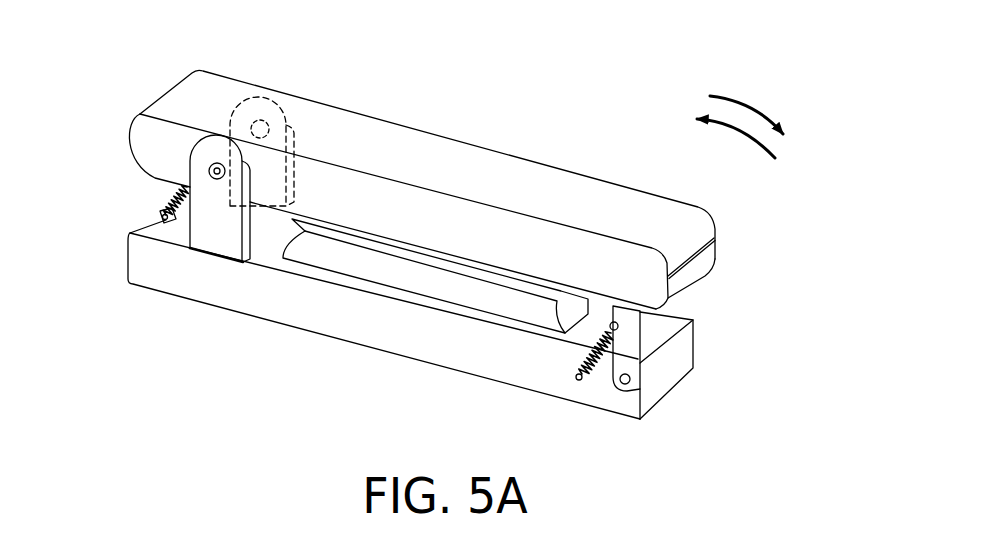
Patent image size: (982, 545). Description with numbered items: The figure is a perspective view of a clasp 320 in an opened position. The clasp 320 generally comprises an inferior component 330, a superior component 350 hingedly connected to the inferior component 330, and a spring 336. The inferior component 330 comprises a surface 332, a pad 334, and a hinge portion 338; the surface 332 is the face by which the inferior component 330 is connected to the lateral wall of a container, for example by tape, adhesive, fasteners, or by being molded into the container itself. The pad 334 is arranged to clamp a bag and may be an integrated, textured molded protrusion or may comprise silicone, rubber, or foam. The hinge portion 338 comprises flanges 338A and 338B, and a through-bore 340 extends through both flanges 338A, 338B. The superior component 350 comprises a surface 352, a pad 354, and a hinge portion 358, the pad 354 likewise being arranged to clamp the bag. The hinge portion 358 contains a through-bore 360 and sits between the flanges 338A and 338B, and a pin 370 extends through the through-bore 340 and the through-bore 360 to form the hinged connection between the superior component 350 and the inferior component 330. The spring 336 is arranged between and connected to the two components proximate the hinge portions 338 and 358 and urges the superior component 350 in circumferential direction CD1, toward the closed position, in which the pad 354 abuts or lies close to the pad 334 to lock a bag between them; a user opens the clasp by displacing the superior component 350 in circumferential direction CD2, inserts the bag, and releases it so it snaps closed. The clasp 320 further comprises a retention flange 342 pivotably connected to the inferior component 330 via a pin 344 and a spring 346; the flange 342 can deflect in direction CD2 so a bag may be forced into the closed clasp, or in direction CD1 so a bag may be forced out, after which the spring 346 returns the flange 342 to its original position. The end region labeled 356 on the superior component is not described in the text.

The clasp 320 is at (609, 90).
The inferior component 330 is at (500, 372).
The surface 332 is at (305, 332).
The pad 334 is at (428, 277).
The spring 336 is at (160, 192).
The hinge portion 338 is at (178, 252).
The flange 338A is at (213, 238).
The flange 338B is at (293, 93).
The through-bore 340 is at (247, 130).
The flange 342 is at (638, 333).
The pin 344 is at (624, 383).
The spring 346 is at (603, 373).
The superior component 350 is at (523, 170).
The surface 352 is at (450, 150).
The pad 354 is at (485, 277).
The arm end 356 is at (682, 292).
The hinge portion 358 is at (199, 106).
The through-bore 360 is at (211, 166).
The pin 370 is at (209, 172).
The circumferential direction CD1 is at (753, 108).
The circumferential direction CD2 is at (737, 132).